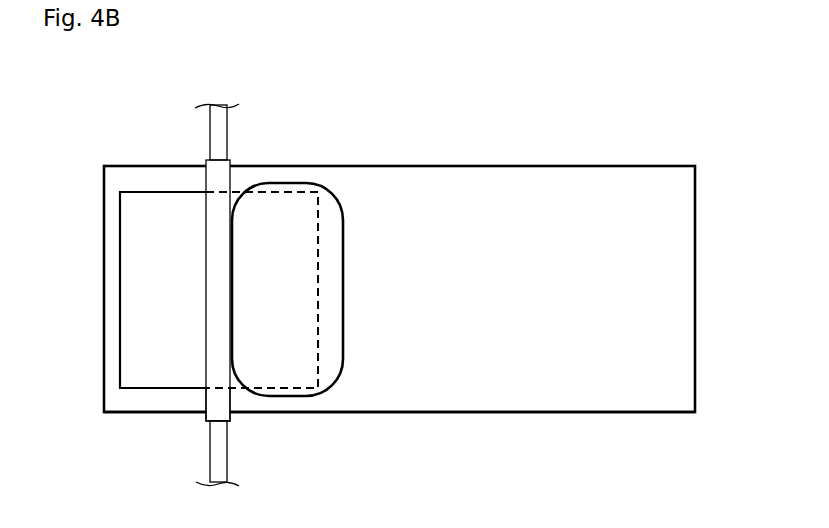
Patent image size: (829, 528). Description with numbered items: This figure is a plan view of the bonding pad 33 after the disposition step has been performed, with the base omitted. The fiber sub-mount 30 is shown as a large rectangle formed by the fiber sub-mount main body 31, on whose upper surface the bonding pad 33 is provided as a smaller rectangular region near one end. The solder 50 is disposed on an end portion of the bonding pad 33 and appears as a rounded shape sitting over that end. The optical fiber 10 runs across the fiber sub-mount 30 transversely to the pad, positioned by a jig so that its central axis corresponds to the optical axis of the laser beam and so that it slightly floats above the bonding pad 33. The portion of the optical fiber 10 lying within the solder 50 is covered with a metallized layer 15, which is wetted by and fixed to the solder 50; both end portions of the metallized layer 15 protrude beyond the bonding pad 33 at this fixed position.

The optical fiber 10 is at (218, 130).
The metallized layer 15 is at (218, 402).
The fiber sub-mount 30 is at (566, 142).
The fiber sub-mount main body 31 is at (489, 389).
The bonding pad 33 is at (153, 323).
The solder 50 is at (326, 215).